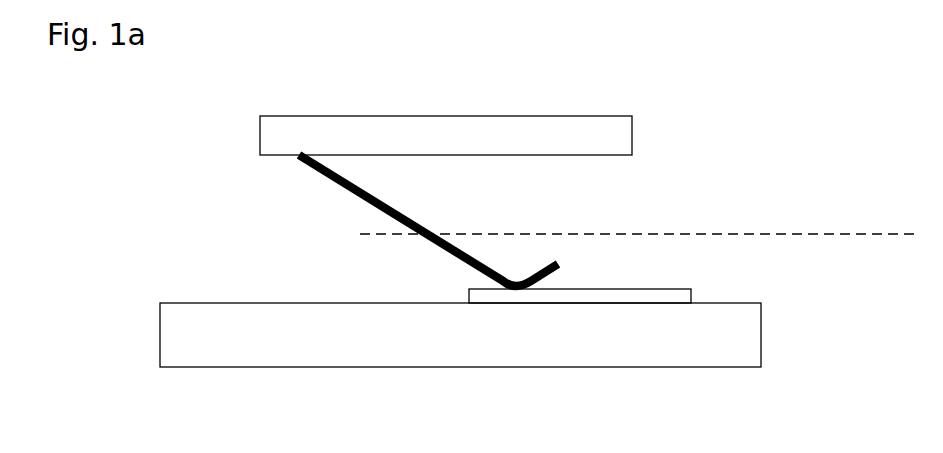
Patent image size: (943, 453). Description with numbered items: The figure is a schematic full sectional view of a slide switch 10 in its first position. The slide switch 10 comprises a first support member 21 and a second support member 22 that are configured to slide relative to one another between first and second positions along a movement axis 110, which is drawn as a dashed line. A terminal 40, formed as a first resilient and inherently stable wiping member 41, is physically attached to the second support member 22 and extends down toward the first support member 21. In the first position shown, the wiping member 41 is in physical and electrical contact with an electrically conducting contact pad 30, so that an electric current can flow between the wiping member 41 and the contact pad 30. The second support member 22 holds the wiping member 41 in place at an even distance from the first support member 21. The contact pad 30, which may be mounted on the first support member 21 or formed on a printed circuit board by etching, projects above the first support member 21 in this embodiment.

The slide switch 10 is at (197, 116).
The first support member 21 is at (720, 341).
The second support member 22 is at (600, 135).
The contact pad 30 is at (591, 297).
The terminal 40 is at (338, 220).
The first wiping member 41 is at (370, 203).
The movement axis 110 is at (705, 234).